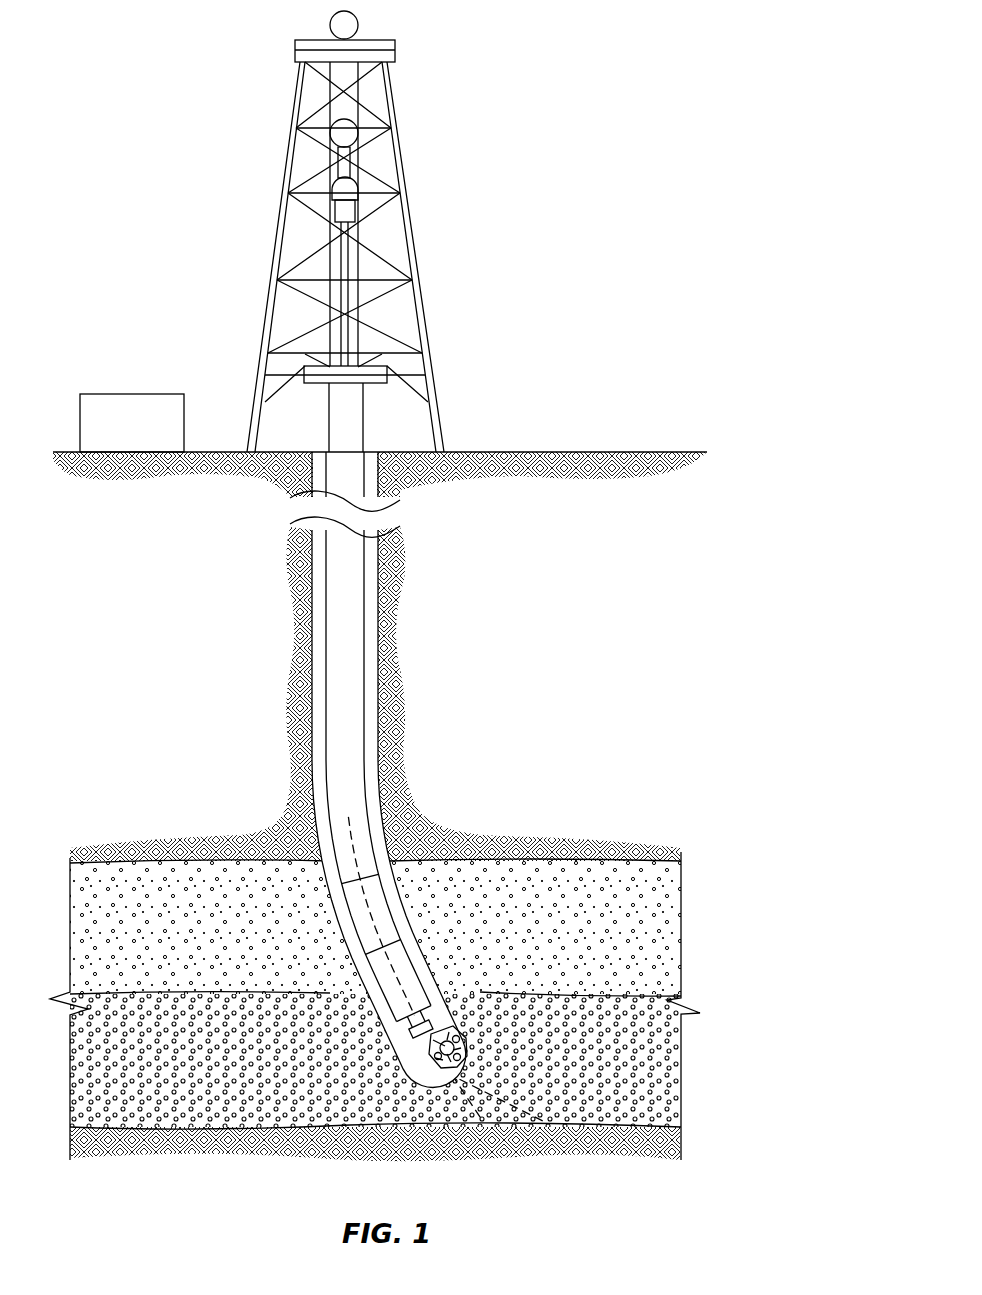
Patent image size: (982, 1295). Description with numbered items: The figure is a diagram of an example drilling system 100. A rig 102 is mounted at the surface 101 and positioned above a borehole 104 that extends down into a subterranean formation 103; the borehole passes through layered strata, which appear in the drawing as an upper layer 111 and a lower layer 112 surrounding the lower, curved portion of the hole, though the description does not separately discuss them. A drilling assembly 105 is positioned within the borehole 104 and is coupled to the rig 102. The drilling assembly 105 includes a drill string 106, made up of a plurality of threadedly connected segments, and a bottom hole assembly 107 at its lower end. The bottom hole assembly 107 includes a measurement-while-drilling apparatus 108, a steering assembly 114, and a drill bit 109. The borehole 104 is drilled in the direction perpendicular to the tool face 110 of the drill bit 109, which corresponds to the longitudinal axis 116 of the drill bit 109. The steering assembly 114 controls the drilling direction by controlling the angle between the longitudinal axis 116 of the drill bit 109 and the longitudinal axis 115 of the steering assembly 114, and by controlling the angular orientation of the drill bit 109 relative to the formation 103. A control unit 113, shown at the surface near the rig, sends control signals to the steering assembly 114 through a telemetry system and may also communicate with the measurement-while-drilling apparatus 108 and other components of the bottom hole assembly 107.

The drilling system 100 is at (628, 90).
The surface 101 is at (682, 452).
The rig 102 is at (397, 42).
The subterranean formation 103 is at (674, 594).
The borehole 104 is at (326, 562).
The drilling assembly 105 is at (298, 674).
The drill string 106 is at (365, 597).
The bottom hole assembly 107 is at (422, 930).
The measurement-while-drilling apparatus 108 is at (349, 918).
The drill bit 109 is at (427, 1040).
The tool face 110 is at (477, 1053).
The first formation layer 111 is at (658, 915).
The target formation layer 112 is at (667, 1087).
The control unit 113 is at (152, 435).
The longitudinal axis of the steering assembly 115 is at (470, 1109).
The steering assembly 114 is at (390, 1003).
The longitudinal axis of the drill bit 116 is at (512, 1097).